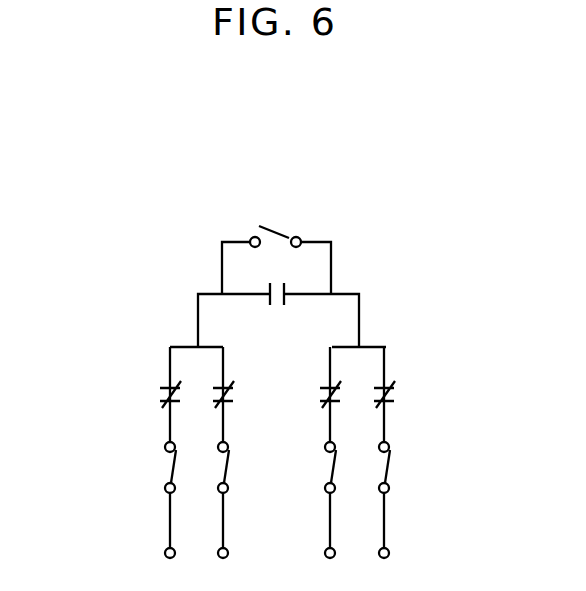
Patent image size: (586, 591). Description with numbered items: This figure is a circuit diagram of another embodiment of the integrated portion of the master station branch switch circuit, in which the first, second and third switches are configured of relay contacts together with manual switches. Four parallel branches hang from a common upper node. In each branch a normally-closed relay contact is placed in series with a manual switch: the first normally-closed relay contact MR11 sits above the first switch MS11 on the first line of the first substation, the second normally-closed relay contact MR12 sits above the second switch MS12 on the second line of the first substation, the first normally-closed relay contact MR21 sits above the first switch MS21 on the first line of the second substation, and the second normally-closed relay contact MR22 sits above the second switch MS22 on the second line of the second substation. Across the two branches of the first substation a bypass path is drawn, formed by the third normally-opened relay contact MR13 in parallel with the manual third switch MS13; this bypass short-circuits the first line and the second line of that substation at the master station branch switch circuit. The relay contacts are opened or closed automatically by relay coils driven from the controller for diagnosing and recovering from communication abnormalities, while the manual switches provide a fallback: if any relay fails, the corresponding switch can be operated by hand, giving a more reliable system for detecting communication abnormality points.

The third switch MS13 is at (286, 235).
The third normally-opened relay contact MR13 is at (268, 300).
The second normally-closed relay contact MR22 is at (167, 390).
The first normally-closed relay contact MR21 is at (228, 403).
The second normally-closed relay contact MR12 is at (328, 390).
The first normally-closed relay contact MR11 is at (390, 385).
The second switch MS22 is at (168, 478).
The first switch MS21 is at (228, 466).
The second switch MS12 is at (331, 478).
The first switch MS11 is at (388, 467).